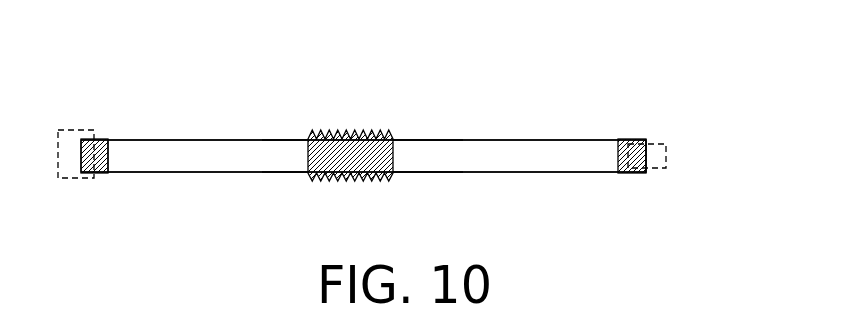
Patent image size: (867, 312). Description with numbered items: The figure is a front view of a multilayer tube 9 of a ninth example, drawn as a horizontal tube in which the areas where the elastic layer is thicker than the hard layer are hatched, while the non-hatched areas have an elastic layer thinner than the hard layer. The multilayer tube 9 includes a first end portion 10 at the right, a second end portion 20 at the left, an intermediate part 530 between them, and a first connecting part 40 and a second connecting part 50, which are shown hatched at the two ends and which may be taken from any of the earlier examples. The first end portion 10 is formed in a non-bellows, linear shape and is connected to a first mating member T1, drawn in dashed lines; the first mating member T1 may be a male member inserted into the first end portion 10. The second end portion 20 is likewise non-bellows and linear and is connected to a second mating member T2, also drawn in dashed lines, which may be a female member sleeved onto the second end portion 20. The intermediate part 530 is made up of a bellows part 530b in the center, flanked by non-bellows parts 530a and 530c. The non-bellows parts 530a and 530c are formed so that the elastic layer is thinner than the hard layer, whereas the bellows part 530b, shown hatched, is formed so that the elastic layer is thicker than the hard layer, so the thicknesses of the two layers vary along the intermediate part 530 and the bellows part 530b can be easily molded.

The multilayer tube 9 is at (716, 92).
The first end portion 10 is at (633, 139).
The second end portion 20 is at (102, 140).
The first connecting part 40 is at (620, 175).
The second connecting part 50 is at (108, 175).
The intermediate part 530 is at (463, 70).
The non-bellows part 530a is at (424, 139).
The bellows part 530b is at (352, 131).
The non-bellows part 530c is at (268, 139).
The first mating member T1 is at (658, 144).
The second mating member T2 is at (77, 130).